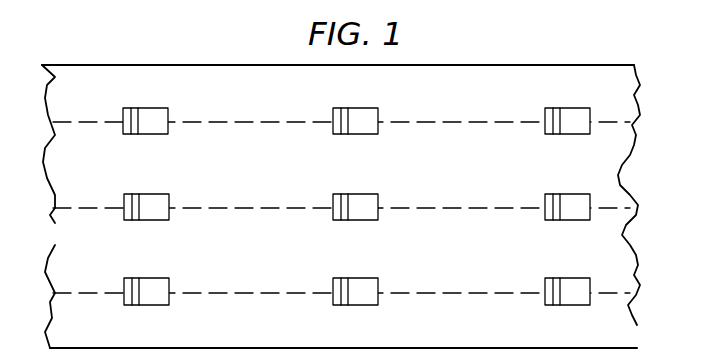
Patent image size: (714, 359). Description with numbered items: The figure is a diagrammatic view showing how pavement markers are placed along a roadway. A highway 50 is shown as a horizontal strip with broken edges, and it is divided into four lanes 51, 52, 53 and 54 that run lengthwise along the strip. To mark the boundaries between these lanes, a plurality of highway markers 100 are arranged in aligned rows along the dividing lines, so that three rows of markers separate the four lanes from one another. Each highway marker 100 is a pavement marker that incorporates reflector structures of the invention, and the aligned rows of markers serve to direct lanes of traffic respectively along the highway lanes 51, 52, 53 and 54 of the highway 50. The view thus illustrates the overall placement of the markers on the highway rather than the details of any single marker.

The highway 50 is at (136, 51).
The highway lane 51 is at (240, 102).
The highway lane 52 is at (252, 176).
The highway lane 53 is at (250, 264).
The highway lane 54 is at (250, 331).
The highway marker 100 is at (148, 194).